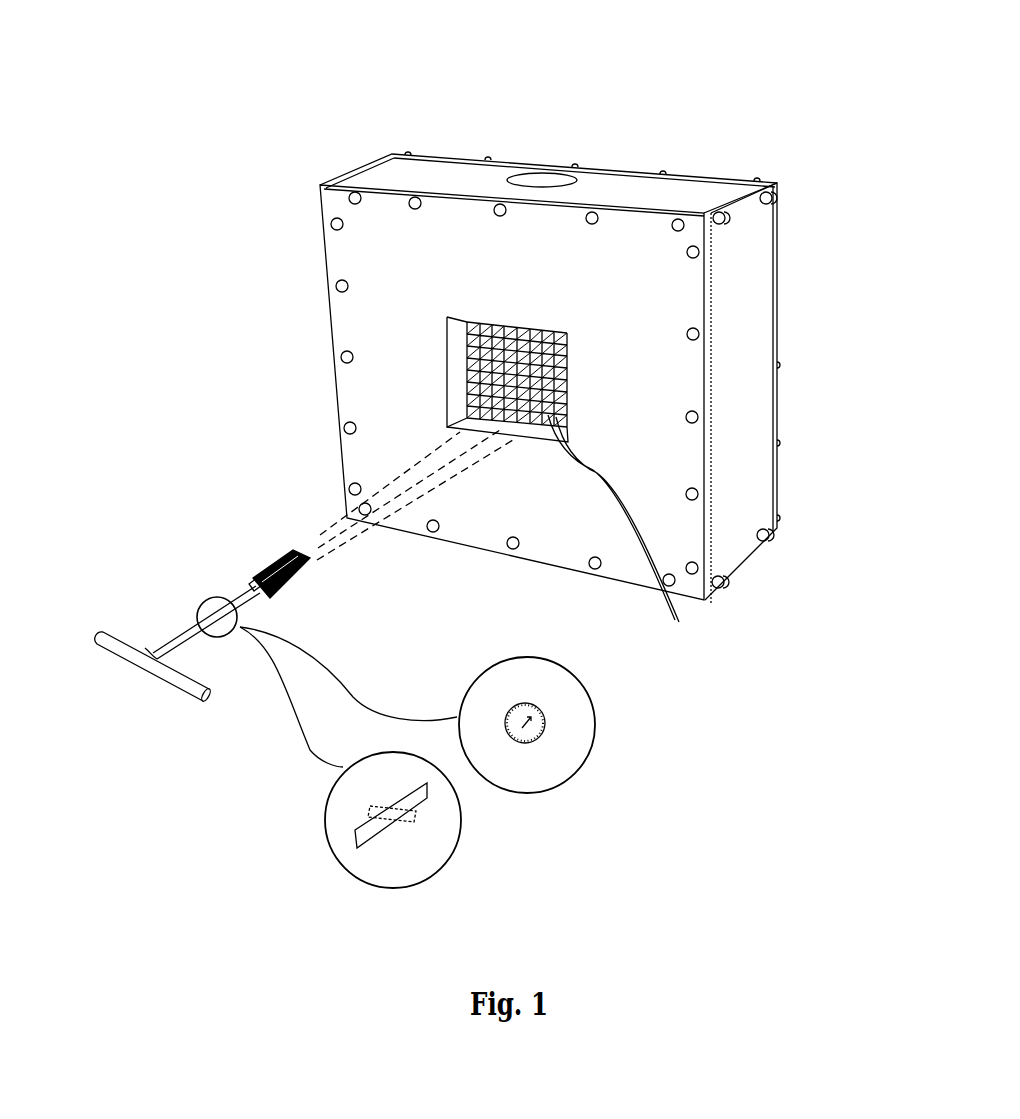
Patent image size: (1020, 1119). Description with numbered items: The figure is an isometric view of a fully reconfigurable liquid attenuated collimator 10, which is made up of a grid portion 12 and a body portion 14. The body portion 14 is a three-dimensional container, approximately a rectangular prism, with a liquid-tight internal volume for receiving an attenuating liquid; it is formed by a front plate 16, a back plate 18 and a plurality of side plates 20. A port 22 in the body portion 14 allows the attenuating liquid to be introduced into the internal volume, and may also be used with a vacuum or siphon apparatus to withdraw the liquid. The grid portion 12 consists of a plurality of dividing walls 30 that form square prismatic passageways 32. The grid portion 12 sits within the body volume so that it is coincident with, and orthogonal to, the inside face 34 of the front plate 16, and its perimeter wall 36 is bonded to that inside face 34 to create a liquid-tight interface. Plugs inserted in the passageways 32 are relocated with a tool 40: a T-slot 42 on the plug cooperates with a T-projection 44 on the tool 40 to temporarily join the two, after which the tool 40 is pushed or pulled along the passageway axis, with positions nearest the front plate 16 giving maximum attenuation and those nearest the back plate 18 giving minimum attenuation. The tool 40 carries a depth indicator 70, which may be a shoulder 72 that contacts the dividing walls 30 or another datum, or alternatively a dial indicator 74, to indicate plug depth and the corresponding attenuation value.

The collimator 10 is at (518, 341).
The grid portion 12 is at (528, 318).
The body portion 14 is at (640, 297).
The front plate 16 is at (400, 253).
The back plate 18 is at (784, 392).
The side plates 20 is at (750, 230).
The port 22 is at (558, 174).
The dividing walls 30 is at (475, 337).
The passageways 32 is at (626, 547).
The inside face 34 is at (467, 360).
The perimeter wall 36 is at (470, 392).
The tool 40 is at (167, 633).
The T-slot 42 is at (282, 557).
The T-projection 44 is at (255, 587).
The depth indicator 70 is at (217, 597).
The shoulder 72 is at (350, 769).
The dial indicator 74 is at (417, 719).